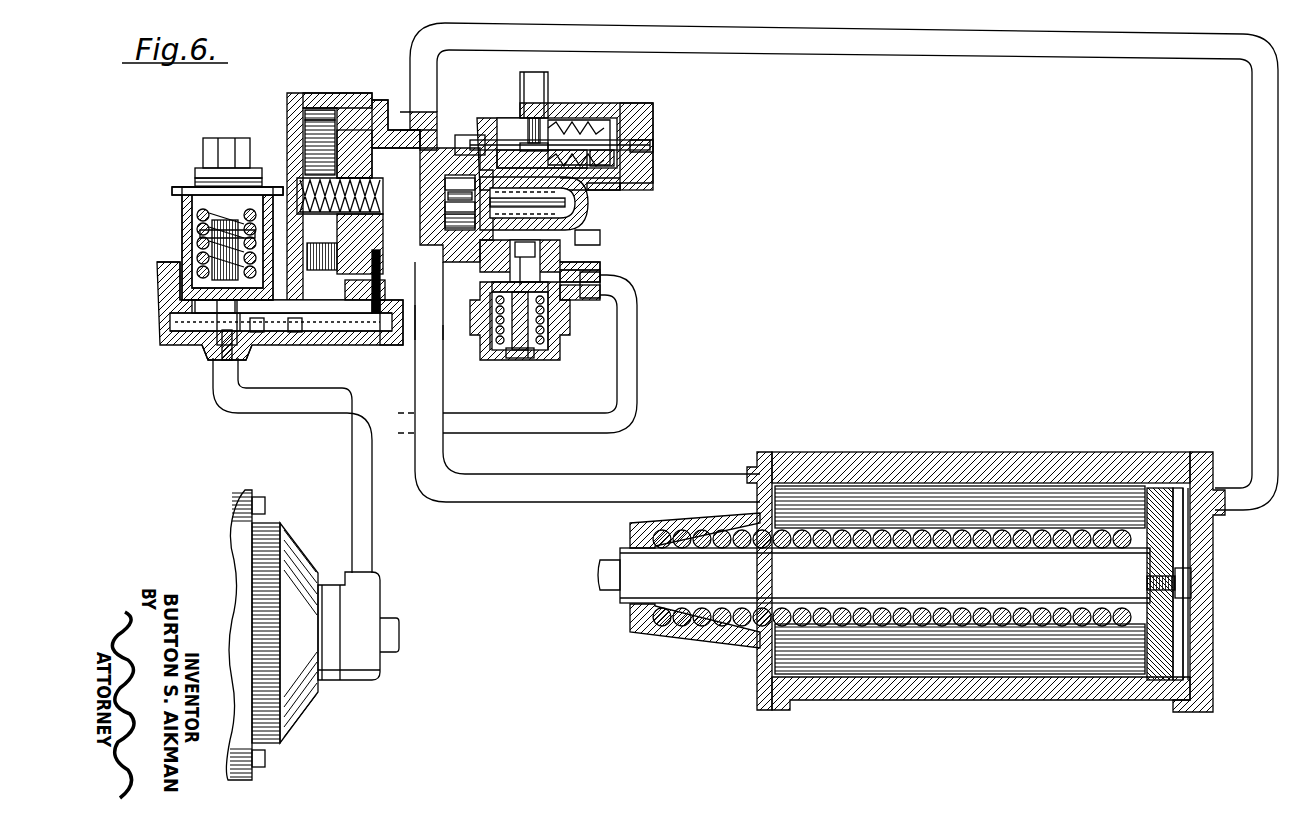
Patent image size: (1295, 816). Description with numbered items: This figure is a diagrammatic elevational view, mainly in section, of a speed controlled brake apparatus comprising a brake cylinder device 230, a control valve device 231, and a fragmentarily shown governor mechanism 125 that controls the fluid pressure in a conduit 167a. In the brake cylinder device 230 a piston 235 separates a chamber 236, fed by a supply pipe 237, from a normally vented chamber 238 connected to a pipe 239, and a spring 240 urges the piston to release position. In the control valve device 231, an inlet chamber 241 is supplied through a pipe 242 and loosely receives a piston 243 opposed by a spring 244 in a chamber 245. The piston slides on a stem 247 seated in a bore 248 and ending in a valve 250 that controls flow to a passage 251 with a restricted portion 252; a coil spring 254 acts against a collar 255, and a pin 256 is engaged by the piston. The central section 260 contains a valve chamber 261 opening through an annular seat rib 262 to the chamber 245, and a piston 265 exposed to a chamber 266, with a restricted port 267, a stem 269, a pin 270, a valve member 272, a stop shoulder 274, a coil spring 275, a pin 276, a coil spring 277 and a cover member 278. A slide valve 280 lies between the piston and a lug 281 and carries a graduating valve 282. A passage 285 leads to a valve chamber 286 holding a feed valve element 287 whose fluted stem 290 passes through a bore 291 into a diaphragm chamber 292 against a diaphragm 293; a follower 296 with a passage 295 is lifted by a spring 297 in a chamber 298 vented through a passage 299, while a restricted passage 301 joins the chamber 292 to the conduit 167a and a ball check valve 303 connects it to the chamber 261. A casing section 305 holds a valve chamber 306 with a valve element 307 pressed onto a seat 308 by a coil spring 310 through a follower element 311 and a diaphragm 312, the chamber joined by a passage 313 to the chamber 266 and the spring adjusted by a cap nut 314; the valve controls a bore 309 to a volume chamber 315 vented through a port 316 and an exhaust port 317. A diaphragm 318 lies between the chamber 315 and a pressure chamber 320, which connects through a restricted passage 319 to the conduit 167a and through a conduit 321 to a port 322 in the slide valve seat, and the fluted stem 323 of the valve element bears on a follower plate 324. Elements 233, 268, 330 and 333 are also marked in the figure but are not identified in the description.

The governor mechanism 125 is at (388, 600).
The conduit 167a is at (327, 422).
The brake cylinder device 230 is at (1002, 462).
The control valve device 231 is at (353, 92).
The shaft 233 is at (874, 575).
The piston 235 is at (1173, 493).
The chamber 236 is at (1187, 553).
The supply pipe 237 is at (1253, 378).
The normally vented chamber 238 is at (888, 510).
The pipe 239 is at (773, 418).
The spring 240 is at (1053, 537).
The inlet chamber 241 is at (500, 135).
The pipe 242 is at (533, 98).
The piston 243 is at (590, 130).
The spring 244 is at (597, 127).
The chamber 245 is at (600, 177).
The stem 247 is at (647, 127).
The bore 248 is at (653, 152).
The valve 250 is at (533, 140).
The passage 251 is at (385, 100).
The restricted portion 252 is at (485, 142).
The coil spring 254 is at (545, 130).
The collar 255 is at (532, 140).
The pin 256 is at (627, 127).
The central section 260 is at (313, 92).
The valve chamber 261 is at (400, 120).
The annular seat rib 262 is at (490, 317).
The piston 265 is at (335, 130).
The chamber 266 is at (330, 150).
The restricted port 267 is at (365, 163).
The seat 268 is at (580, 295).
The stem 269 is at (413, 153).
The pin 270 is at (580, 224).
The valve member 272 is at (542, 159).
The stop shoulder 274 is at (462, 187).
The coil spring 275 is at (610, 230).
The transversely disposed pin 276 is at (586, 203).
The coil spring 277 is at (340, 205).
The cap or cover member 278 is at (580, 258).
The slide valve 280 is at (436, 188).
The lug 281 is at (430, 334).
The graduating valve 282 is at (470, 215).
The passage 285 is at (592, 268).
The valve chamber 286 is at (540, 253).
The feed valve element 287 is at (590, 263).
The fluted stem 290 is at (595, 280).
The bore 291 is at (550, 313).
The diaphragm chamber 292 is at (487, 343).
The diaphragm 293 is at (548, 340).
The passage 295 is at (523, 360).
The follower 296 is at (543, 353).
The spring 297 is at (533, 360).
The chamber 298 is at (503, 358).
The passage 299 is at (488, 353).
The restricted passage 301 is at (603, 288).
The ball check valve 303 is at (452, 192).
The casing section 305 is at (195, 312).
The valve chamber 306 is at (195, 297).
The valve element 307 is at (198, 233).
The seat 308 is at (175, 348).
The bore 309 is at (210, 352).
The coil spring 310 is at (188, 215).
The follower element 311 is at (220, 245).
The diaphragm 312 is at (165, 280).
The passage 313 is at (345, 244).
The cap nut 314 is at (210, 182).
The volume chamber 315 is at (297, 332).
The port 316 is at (373, 290).
The exhaust port 317 is at (428, 322).
The diaphragm 318 is at (247, 360).
The restricted passage 319 is at (217, 366).
The pressure chamber 320 is at (250, 331).
The passage and conduit 321 is at (393, 337).
The port 322 is at (347, 291).
The fluted stem 323 is at (228, 370).
The follower plate 324 is at (177, 322).
The ring 330 is at (436, 213).
The passage 333 is at (587, 183).